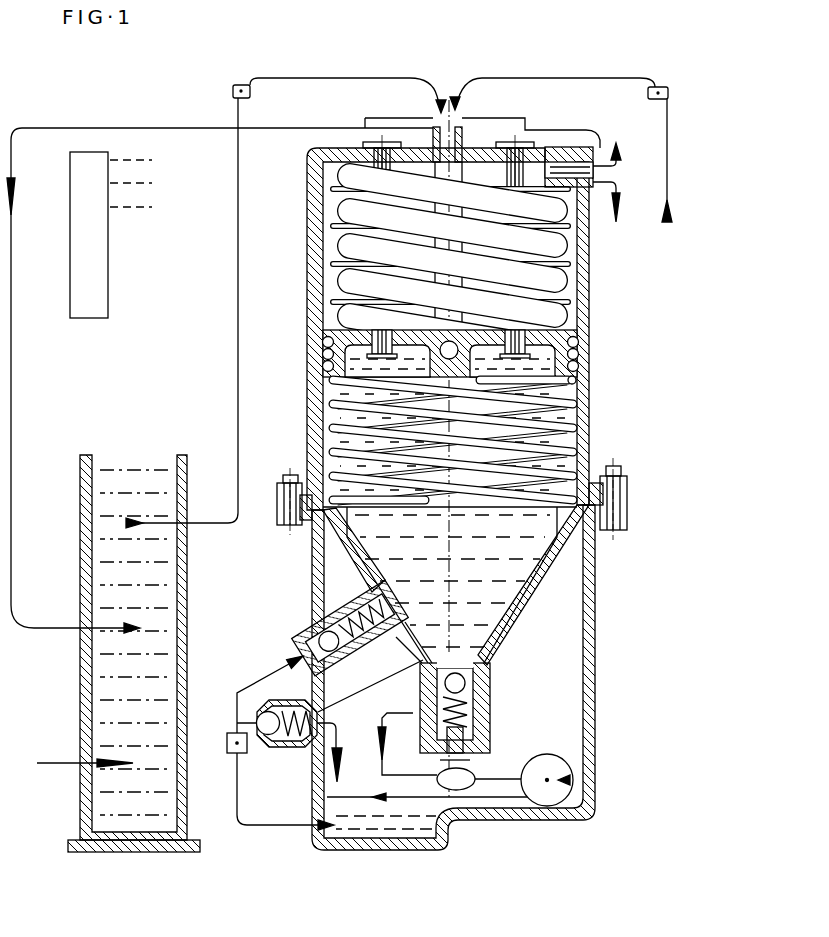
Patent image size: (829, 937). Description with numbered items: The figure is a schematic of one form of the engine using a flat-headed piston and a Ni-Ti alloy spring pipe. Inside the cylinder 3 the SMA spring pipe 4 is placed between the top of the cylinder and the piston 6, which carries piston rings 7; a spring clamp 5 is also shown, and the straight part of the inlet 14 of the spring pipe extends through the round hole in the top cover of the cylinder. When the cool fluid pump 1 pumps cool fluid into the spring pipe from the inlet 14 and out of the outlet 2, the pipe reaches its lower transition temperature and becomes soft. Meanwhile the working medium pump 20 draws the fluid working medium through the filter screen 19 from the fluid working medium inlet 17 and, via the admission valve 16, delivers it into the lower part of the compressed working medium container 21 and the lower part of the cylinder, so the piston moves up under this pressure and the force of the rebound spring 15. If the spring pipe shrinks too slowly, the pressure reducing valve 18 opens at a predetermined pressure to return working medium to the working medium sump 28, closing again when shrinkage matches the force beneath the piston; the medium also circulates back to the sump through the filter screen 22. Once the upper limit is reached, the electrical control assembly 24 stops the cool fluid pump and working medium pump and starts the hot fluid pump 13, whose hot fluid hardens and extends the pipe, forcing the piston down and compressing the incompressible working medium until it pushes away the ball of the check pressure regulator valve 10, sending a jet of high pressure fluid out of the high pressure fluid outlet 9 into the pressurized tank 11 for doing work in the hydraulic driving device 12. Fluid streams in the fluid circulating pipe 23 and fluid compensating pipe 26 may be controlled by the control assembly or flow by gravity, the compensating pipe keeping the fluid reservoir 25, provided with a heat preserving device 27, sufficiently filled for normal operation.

The cool fluid pump 1 is at (668, 92).
The outlet 2 is at (583, 168).
The cylinder 3 is at (588, 255).
The SMA spring pipe 4 is at (520, 263).
The spring clamp 5 is at (540, 287).
The piston 6 is at (588, 330).
The piston rings 7 is at (593, 360).
The high pressure fluid outlet 9 is at (480, 702).
The check pressure regulator valve 10 is at (480, 730).
The pressurized tank 11 is at (458, 772).
The hydraulic driving device 12 is at (560, 795).
The hot fluid pump 13 is at (233, 91).
The inlet 14 is at (365, 118).
The rebound spring 15 is at (335, 452).
The admission valve 16 is at (318, 612).
The fluid working medium inlet 17 is at (303, 638).
The pressure reducing valve 18 is at (262, 716).
The filter screen 19 is at (290, 664).
The working medium pump 20 is at (233, 733).
The compressed working medium container 21 is at (272, 745).
The filter screen 22 is at (320, 806).
The fluid circulating pipe 23 is at (19, 136).
The electrical control assembly 24 is at (78, 300).
The fluid reservoir 25 is at (80, 503).
The fluid compensating pipe 26 is at (82, 760).
The heat preserving device 27 is at (78, 840).
The working medium sump 28 is at (318, 838).